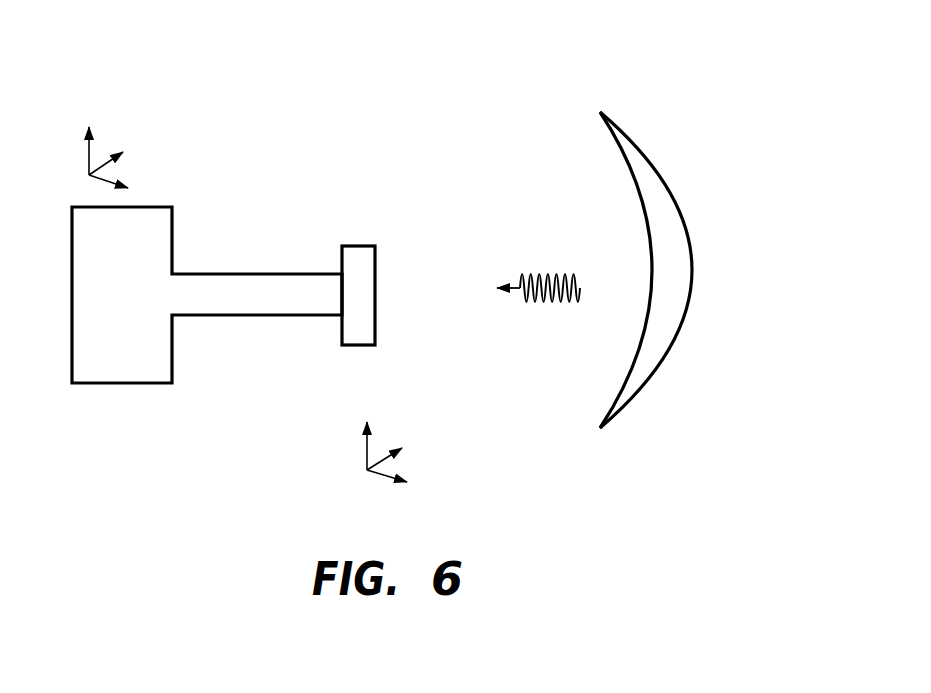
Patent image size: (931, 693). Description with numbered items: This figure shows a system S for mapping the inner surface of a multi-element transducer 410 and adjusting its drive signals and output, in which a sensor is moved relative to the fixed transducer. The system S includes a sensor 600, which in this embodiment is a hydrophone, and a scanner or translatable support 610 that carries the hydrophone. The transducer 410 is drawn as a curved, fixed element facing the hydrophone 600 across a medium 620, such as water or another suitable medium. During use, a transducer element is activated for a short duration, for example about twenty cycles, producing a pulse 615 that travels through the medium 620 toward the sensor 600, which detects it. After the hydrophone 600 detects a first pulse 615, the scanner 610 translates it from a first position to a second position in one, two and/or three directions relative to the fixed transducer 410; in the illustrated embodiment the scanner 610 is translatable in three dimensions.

The system S is at (250, 172).
The scanner 610 is at (208, 258).
The sensor 600 is at (363, 233).
The medium 620 is at (518, 230).
The pulse 615 is at (533, 302).
The multi-element transducer 410 is at (683, 207).